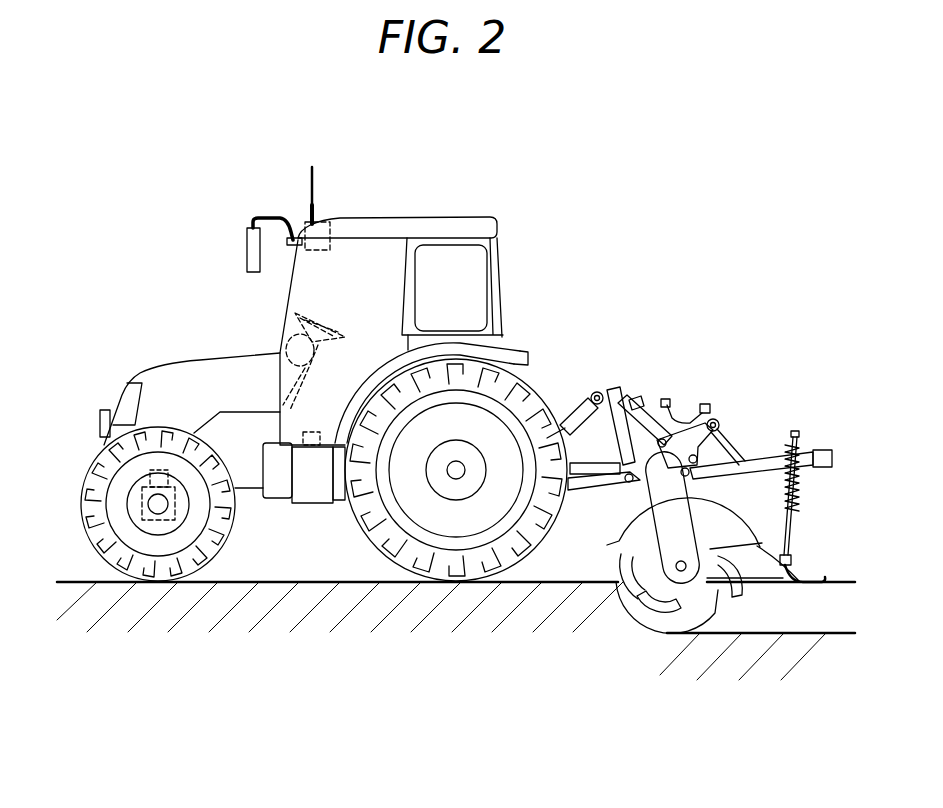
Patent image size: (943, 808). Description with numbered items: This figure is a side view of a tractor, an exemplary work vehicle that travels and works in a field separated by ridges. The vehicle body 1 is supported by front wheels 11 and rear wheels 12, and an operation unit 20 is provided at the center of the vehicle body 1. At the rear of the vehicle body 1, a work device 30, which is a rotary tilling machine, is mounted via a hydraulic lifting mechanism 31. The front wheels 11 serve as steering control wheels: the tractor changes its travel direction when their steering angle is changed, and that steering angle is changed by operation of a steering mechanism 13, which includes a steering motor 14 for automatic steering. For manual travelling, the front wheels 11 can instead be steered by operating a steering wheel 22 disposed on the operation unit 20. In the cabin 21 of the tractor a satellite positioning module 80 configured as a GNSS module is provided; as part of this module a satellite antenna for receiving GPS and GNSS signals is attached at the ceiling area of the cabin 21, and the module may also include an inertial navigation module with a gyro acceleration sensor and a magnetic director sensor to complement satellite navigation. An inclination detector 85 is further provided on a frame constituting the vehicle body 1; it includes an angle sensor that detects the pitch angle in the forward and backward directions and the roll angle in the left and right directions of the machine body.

The vehicle body 1 is at (344, 354).
The front wheels 11 is at (152, 582).
The rear wheels 12 is at (468, 584).
The steering mechanism 13 is at (137, 502).
The steering motor 14 is at (133, 477).
The operation unit 20 is at (435, 287).
The cabin 21 is at (498, 227).
The steering wheel 22 is at (318, 338).
The work device 30 is at (680, 615).
The hydraulic lifting mechanism 31 is at (628, 386).
The satellite positioning module 80 is at (321, 213).
The inclination detector 85 is at (310, 446).